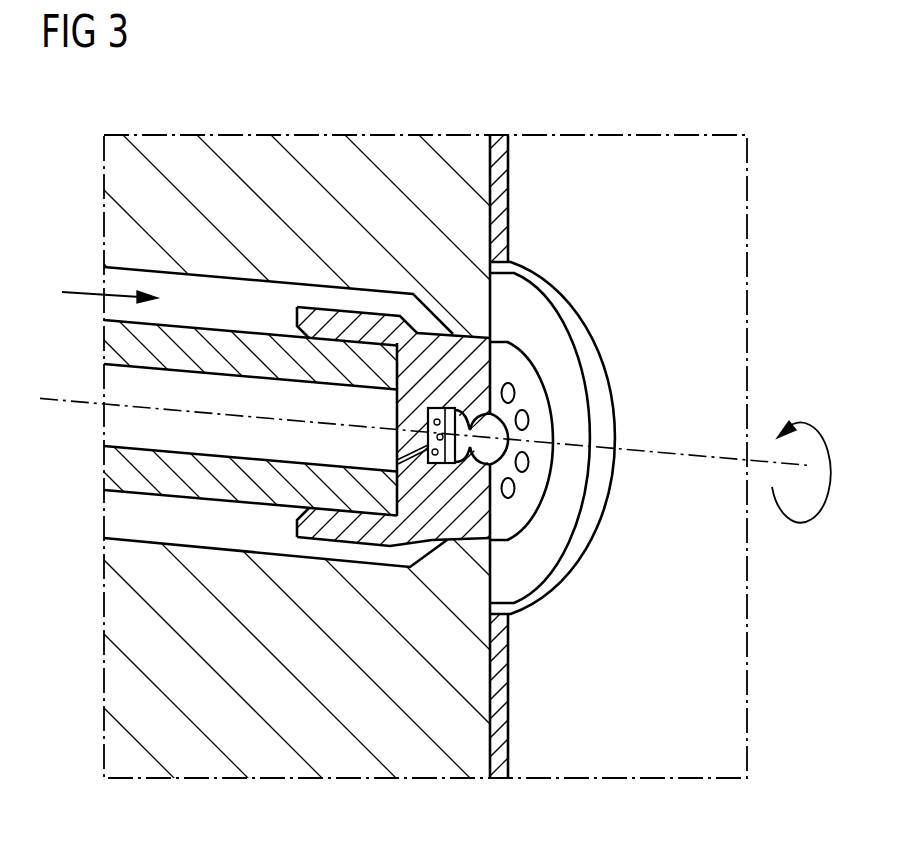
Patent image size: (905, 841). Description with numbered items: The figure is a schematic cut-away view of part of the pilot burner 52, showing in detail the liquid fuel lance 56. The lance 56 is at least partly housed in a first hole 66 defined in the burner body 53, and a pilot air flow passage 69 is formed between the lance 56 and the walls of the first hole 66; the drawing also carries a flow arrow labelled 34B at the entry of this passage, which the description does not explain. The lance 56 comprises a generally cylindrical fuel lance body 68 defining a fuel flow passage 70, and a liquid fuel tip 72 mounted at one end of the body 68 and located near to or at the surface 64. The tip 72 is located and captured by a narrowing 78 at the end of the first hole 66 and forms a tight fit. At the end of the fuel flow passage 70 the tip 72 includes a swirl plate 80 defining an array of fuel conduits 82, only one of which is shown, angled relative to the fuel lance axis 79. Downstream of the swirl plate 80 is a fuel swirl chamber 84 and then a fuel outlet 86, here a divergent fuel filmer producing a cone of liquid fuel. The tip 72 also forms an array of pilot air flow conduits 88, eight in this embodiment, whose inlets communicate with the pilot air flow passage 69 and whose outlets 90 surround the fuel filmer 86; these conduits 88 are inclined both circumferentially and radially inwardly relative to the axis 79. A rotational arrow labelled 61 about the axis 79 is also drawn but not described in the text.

The pilot burner 52 is at (326, 148).
The burner body 53 is at (115, 190).
The liquid fuel lance 56 is at (276, 255).
The fuel flow 34B is at (85, 290).
The pilot air flow passage 69 is at (203, 285).
The first hole 66 is at (218, 547).
The fuel lance axis 79 is at (80, 398).
The fuel flow passage 70 is at (115, 425).
The fuel lance body 68 is at (115, 463).
The liquid fuel tip 72 is at (415, 497).
The swirl plate 80 is at (395, 412).
The fuel conduits 82 is at (395, 458).
The fuel swirl chamber 84 is at (452, 408).
The pilot air flow conduits 88 is at (468, 540).
The fuel outlet 86 is at (497, 505).
The narrowing 78 is at (492, 311).
The outlets 90 is at (530, 421).
The surface 64 is at (691, 284).
The swirl direction 61 is at (797, 520).